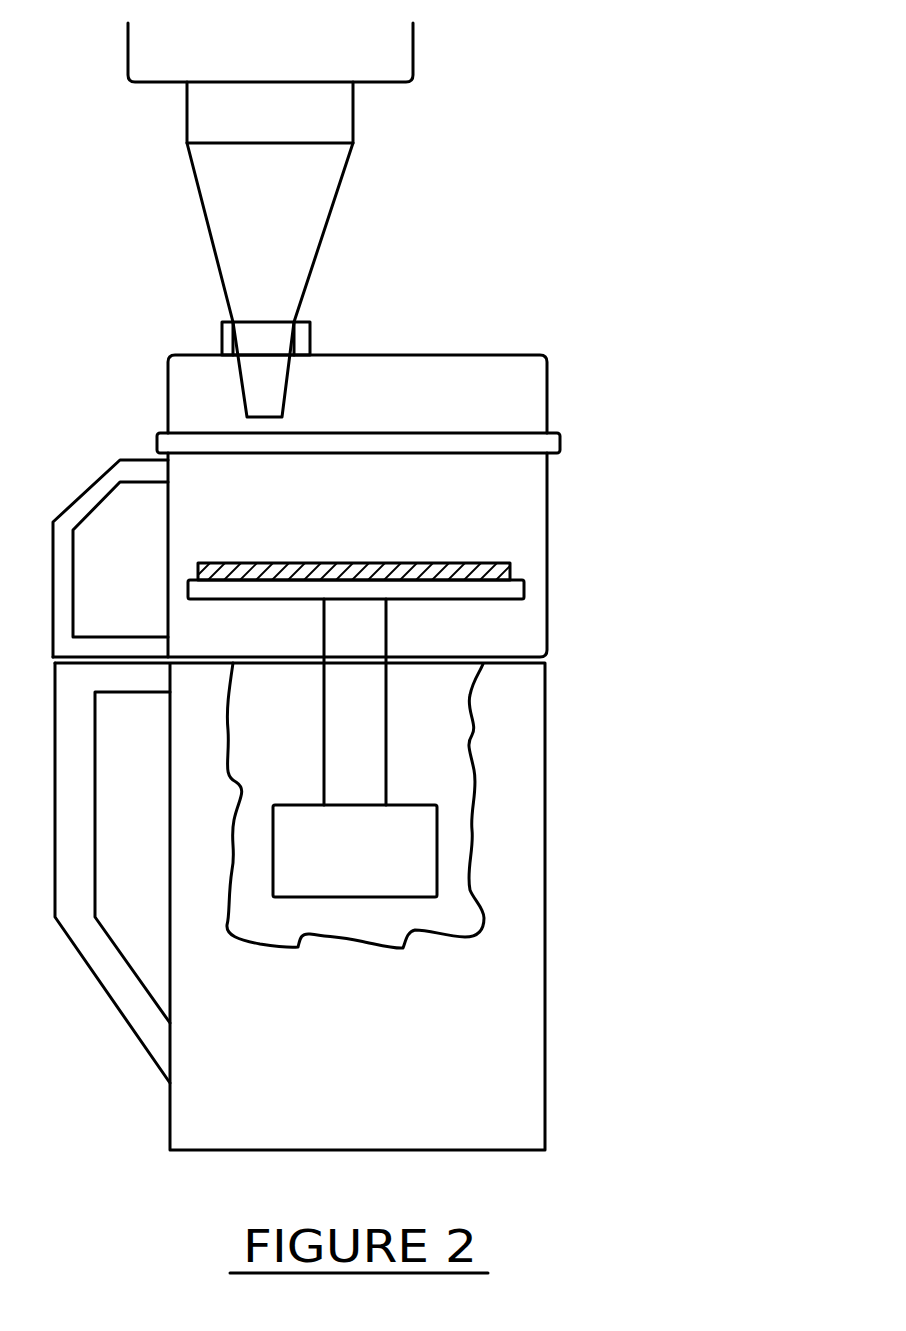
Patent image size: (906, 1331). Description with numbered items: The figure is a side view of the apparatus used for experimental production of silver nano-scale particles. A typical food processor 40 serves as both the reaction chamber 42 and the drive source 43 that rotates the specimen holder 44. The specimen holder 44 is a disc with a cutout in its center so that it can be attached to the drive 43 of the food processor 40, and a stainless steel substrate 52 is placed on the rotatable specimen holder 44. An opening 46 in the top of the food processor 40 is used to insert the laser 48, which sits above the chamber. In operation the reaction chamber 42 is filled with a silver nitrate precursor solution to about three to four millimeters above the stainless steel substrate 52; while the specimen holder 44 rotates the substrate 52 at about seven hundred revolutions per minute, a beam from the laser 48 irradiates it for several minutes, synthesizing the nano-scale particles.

The food processor 40 is at (617, 317).
The reaction chamber 42 is at (548, 500).
The drive source 43 is at (415, 867).
The specimen holder 44 is at (524, 592).
The opening 46 is at (310, 337).
The laser 48 is at (413, 52).
The stainless steel substrate 52 is at (510, 568).